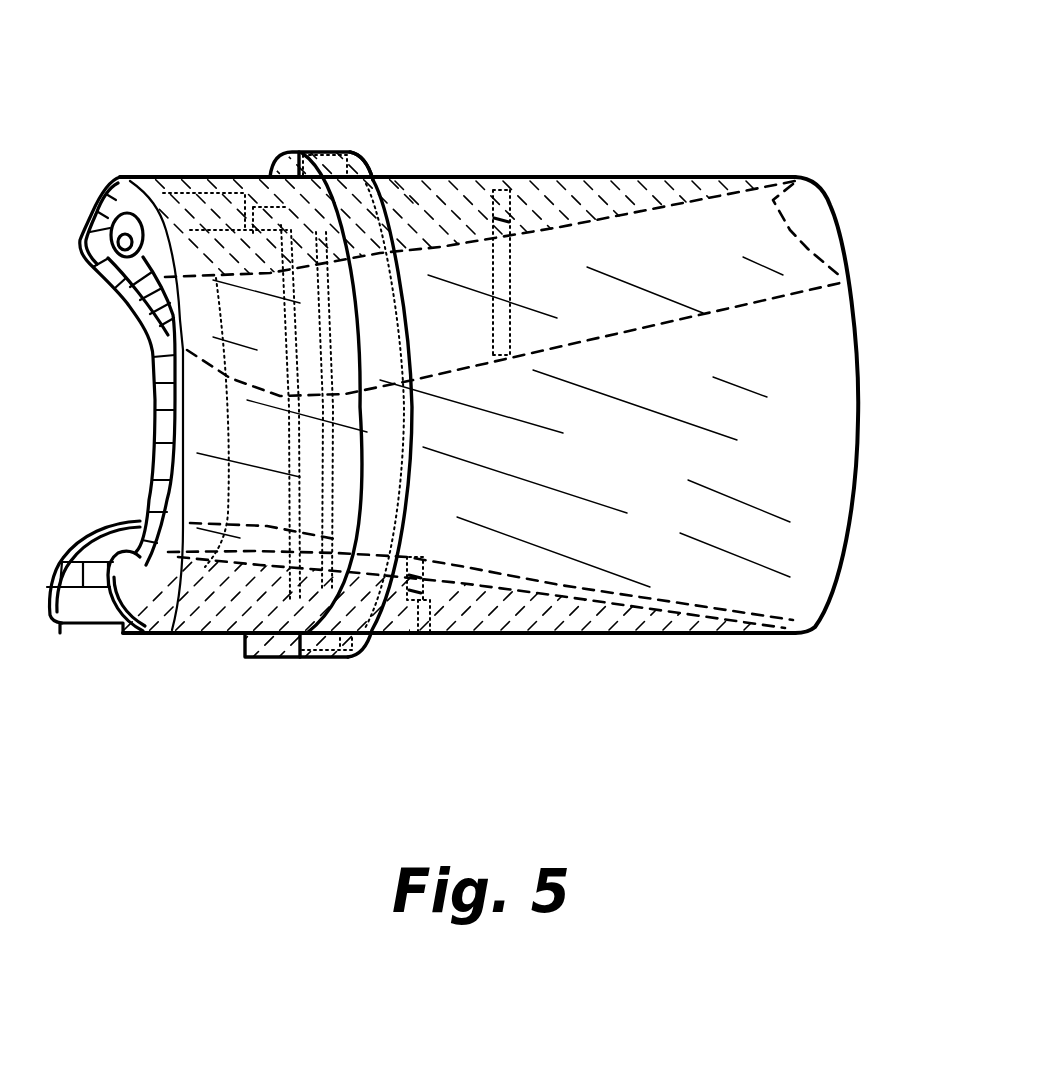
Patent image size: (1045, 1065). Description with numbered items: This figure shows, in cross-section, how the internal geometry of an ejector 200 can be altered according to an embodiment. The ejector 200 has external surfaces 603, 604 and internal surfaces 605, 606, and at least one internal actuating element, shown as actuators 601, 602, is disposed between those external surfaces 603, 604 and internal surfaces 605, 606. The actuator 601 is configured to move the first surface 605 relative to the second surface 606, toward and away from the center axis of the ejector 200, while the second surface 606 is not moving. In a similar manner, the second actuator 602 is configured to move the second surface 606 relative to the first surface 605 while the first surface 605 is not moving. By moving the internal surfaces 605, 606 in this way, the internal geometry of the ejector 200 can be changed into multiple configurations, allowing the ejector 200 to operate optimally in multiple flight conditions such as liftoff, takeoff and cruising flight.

The ejector 200 is at (210, 140).
The actuator 601 is at (502, 205).
The second actuator 602 is at (426, 620).
The external surface 603 is at (392, 180).
The external surface 604 is at (382, 632).
The first surface 605 is at (800, 293).
The second surface 606 is at (408, 557).